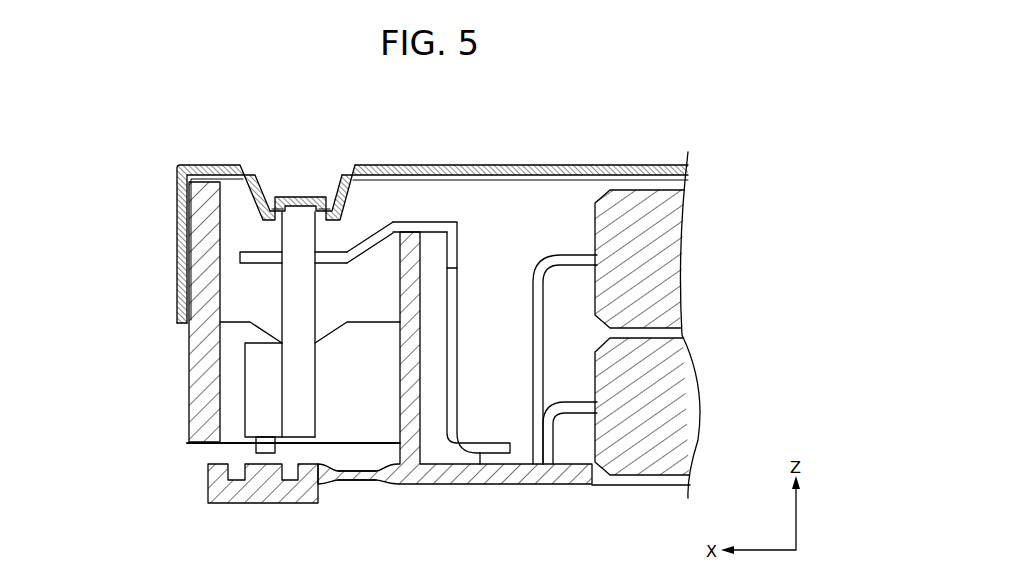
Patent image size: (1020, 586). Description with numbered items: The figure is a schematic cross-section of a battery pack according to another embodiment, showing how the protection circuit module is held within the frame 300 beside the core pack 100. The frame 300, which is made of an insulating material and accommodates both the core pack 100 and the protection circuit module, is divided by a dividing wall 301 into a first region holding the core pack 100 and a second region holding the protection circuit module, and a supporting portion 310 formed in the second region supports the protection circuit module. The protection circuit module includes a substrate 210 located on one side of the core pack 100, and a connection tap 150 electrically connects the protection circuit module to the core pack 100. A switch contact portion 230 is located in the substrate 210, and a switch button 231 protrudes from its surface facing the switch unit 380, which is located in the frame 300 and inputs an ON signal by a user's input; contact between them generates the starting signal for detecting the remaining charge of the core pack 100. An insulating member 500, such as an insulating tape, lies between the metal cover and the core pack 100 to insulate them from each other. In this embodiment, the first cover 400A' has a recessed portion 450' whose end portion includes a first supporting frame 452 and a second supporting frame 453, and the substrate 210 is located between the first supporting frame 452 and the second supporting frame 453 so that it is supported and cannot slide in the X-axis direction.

The core pack 100 is at (649, 187).
The connection tap 150 is at (450, 227).
The substrate 210 is at (295, 365).
The switch contact portion 230 is at (255, 375).
The switch button 231 is at (256, 446).
The frame 300 is at (188, 413).
The dividing wall 301 is at (405, 418).
The supporting portion 310 is at (342, 423).
The switch unit 380 is at (260, 504).
The first cover 400A' is at (515, 139).
The recessed portion 450' is at (266, 218).
The first supporting frame 452 is at (342, 230).
The second supporting frame 453 is at (262, 222).
The insulating member 500 is at (545, 190).